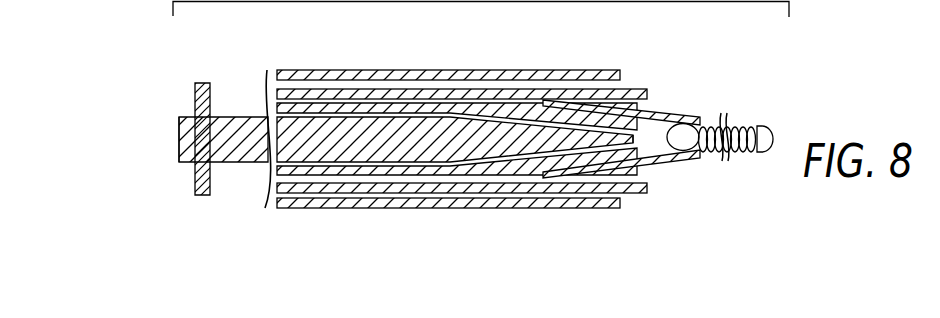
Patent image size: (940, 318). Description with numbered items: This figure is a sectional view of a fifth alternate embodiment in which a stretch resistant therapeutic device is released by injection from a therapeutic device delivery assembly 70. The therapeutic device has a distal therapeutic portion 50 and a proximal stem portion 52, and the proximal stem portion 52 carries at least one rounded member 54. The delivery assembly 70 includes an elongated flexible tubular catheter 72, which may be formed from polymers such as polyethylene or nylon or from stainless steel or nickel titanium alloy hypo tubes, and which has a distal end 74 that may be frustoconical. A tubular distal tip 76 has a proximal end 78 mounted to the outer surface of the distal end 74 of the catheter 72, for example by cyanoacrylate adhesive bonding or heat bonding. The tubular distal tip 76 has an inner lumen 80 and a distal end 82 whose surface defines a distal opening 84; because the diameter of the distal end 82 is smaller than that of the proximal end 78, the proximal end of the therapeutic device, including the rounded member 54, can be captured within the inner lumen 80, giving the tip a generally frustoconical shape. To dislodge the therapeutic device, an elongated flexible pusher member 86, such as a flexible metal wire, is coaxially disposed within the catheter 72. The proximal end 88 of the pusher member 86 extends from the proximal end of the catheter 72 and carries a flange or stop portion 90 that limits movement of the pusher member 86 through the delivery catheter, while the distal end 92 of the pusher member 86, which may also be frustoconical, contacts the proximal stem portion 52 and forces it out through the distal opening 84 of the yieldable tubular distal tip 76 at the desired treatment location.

The distal therapeutic portion 50 is at (768, 121).
The proximal stem portion 52 is at (713, 108).
The rounded member 54 is at (673, 147).
The therapeutic device delivery assembly 70 is at (253, 173).
The elongated flexible tubular catheter 72 is at (415, 108).
The distal end 74 is at (502, 103).
The tubular distal tip 76 is at (673, 113).
The proximal end 78 is at (576, 174).
The inner lumen 80 is at (642, 157).
The distal end 82 is at (693, 153).
The distal opening 84 is at (715, 158).
The elongated flexible pusher member 86 is at (249, 117).
The proximal end 88 is at (184, 178).
The flange or stop portion 90 is at (213, 195).
The distal end 92 is at (642, 130).